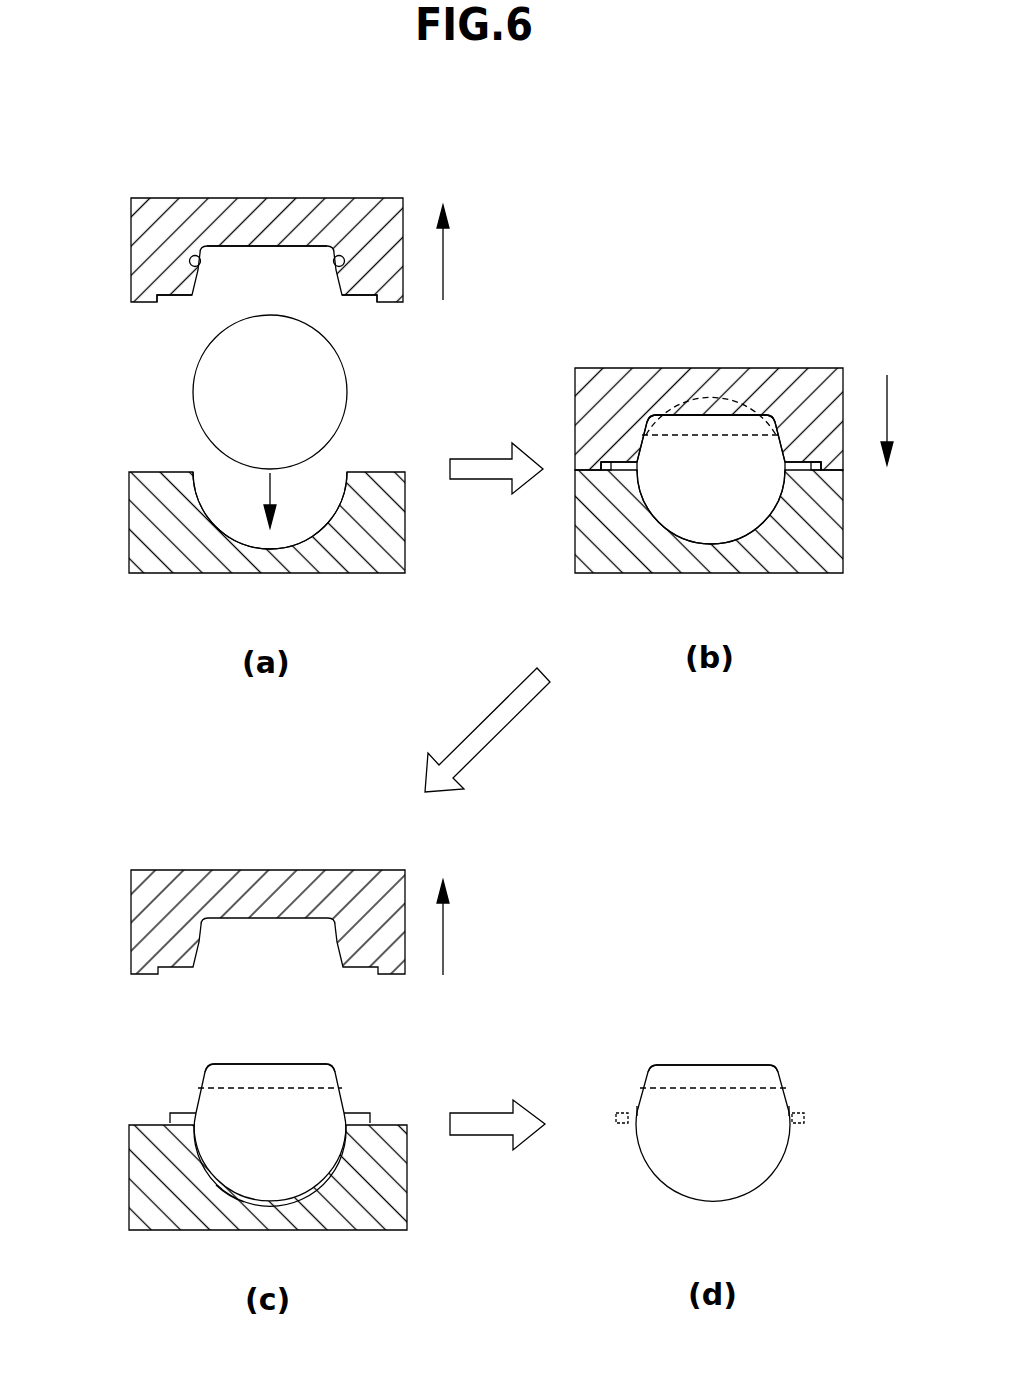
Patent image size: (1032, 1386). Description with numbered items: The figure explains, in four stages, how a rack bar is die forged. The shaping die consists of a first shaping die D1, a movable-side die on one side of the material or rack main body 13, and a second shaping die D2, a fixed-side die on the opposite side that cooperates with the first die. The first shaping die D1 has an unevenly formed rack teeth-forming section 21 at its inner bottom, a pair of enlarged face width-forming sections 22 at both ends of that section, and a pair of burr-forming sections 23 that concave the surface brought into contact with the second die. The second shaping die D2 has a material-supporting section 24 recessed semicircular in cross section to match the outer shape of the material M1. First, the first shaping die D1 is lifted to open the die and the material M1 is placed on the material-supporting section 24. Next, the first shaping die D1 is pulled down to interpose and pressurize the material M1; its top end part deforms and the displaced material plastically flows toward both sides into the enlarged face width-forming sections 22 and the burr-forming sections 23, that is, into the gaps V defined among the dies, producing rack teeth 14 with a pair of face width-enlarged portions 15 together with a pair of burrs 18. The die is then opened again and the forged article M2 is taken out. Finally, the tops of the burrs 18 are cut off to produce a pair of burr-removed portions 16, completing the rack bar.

The rack main body 13 is at (690, 548).
The rack teeth 14 is at (722, 415).
The face width-enlarged portions 15 is at (645, 418).
The burr-removed portions 16 is at (638, 1110).
The burrs 18 is at (605, 462).
The rack teeth-forming section 21 is at (275, 246).
The enlarged face width-forming sections 22 is at (191, 260).
The burr-forming sections 23 is at (172, 303).
The material-supporting section 24 is at (272, 548).
The first shaping die D1 is at (116, 212).
The second shaping die D2 is at (117, 556).
The material M1 is at (218, 404).
The forged article M2 is at (225, 1195).
The gaps V is at (606, 472).